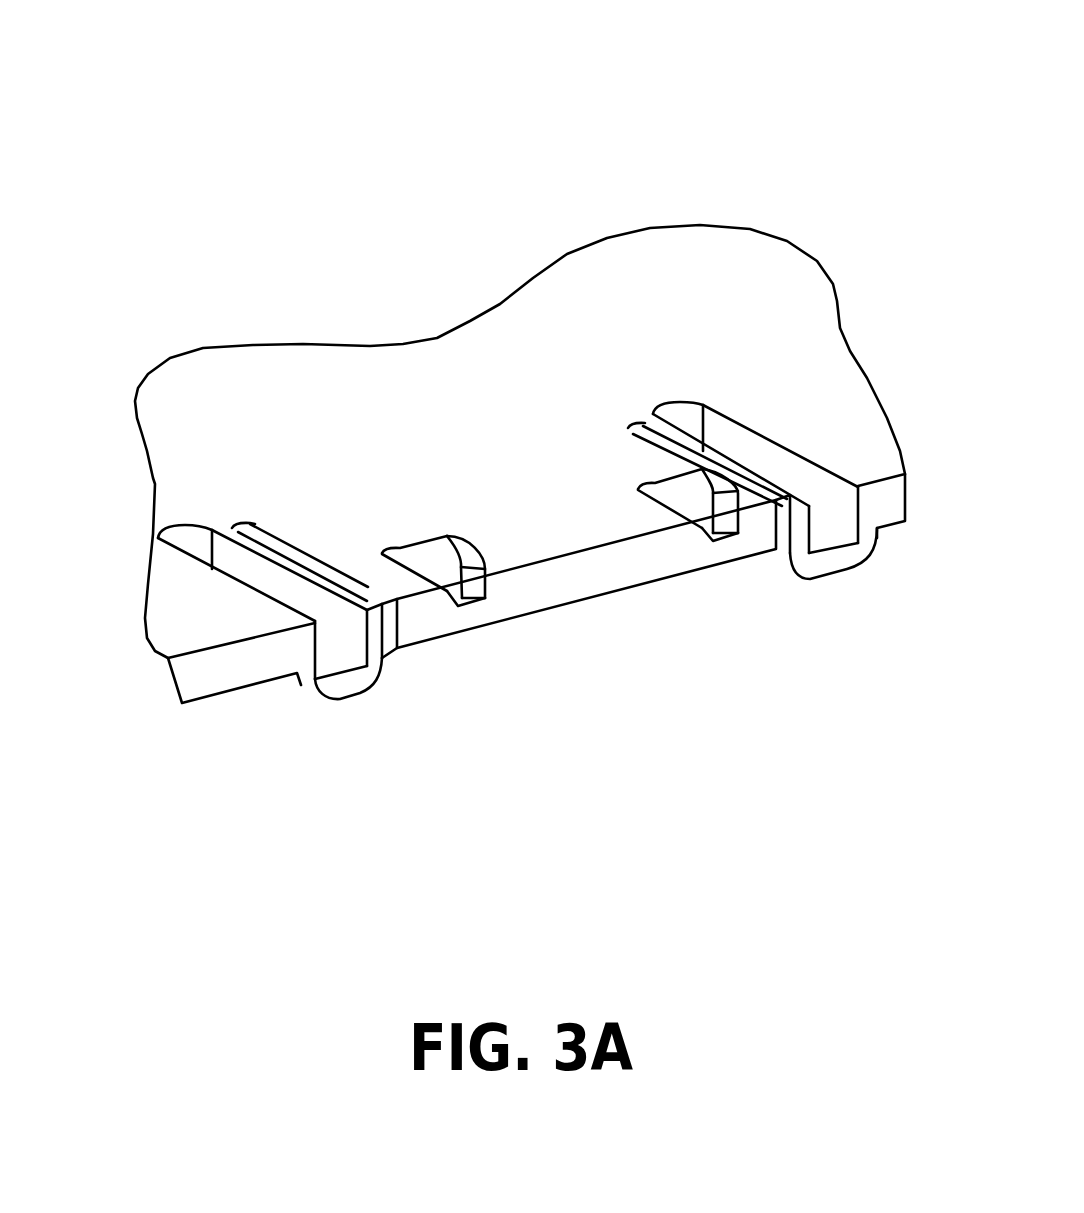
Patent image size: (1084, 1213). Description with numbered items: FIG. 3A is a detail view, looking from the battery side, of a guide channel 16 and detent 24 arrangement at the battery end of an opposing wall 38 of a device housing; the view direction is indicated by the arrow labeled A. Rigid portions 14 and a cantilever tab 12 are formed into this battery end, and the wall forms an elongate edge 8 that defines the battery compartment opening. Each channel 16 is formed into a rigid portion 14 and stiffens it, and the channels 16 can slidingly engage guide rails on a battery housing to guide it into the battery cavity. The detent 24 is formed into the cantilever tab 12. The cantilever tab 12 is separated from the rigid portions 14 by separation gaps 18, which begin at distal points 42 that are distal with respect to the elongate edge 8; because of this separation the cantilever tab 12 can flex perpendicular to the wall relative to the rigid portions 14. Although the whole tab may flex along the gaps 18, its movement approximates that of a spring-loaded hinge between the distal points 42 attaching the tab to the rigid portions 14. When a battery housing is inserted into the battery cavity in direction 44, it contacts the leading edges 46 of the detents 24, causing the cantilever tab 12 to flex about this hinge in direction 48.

The elongate edge 8 is at (144, 676).
The cantilever tab 12 is at (559, 568).
The rigid portions 14 is at (810, 386).
The guide channel 16 is at (339, 621).
The separation gaps 18 is at (282, 545).
The detent 24 is at (419, 551).
The opposing wall 38 is at (398, 255).
The distal points 42 is at (154, 527).
The direction 44 is at (544, 695).
The leading edges 46 is at (480, 560).
The direction 48 is at (492, 901).
The view direction A is at (485, 92).